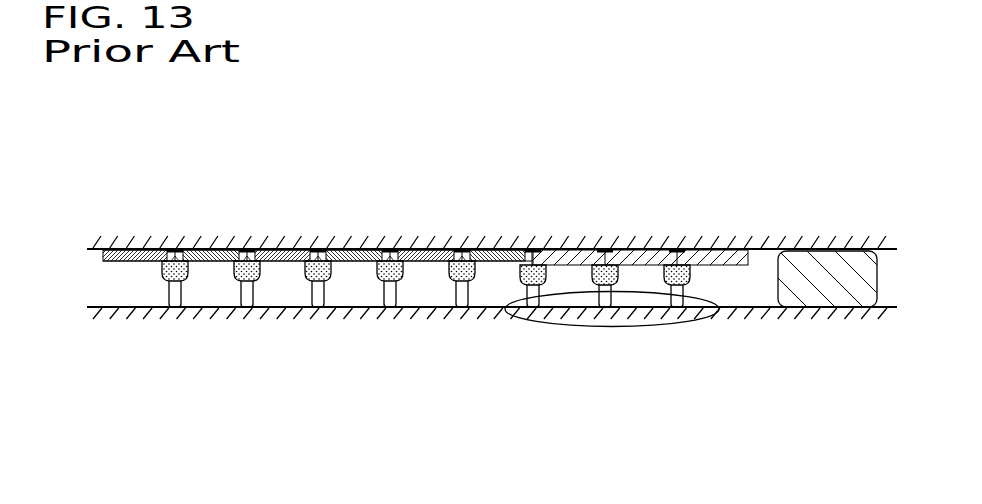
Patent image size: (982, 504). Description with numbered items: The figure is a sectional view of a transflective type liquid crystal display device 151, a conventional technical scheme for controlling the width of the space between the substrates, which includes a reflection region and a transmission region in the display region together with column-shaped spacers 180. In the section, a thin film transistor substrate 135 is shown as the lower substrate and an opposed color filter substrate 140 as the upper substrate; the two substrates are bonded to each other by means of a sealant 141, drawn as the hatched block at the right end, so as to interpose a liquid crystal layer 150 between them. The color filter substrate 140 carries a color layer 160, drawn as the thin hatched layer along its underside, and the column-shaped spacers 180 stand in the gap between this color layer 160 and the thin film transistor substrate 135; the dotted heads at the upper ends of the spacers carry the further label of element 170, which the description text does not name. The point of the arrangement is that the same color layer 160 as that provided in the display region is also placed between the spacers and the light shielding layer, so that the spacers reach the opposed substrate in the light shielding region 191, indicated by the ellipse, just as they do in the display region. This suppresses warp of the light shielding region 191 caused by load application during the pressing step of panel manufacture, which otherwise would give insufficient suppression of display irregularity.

The transflective type liquid crystal display device 151 is at (498, 178).
The opposed color filter substrate 140 is at (282, 246).
The color layer 160 is at (101, 251).
The liquid crystal layer 150 is at (112, 287).
The bump electrode 170 is at (158, 278).
The column-shaped spacers 180 is at (390, 294).
The thin film transistor substrate 135 is at (277, 308).
The light shielding region 191 is at (620, 316).
The sealant 141 is at (835, 295).